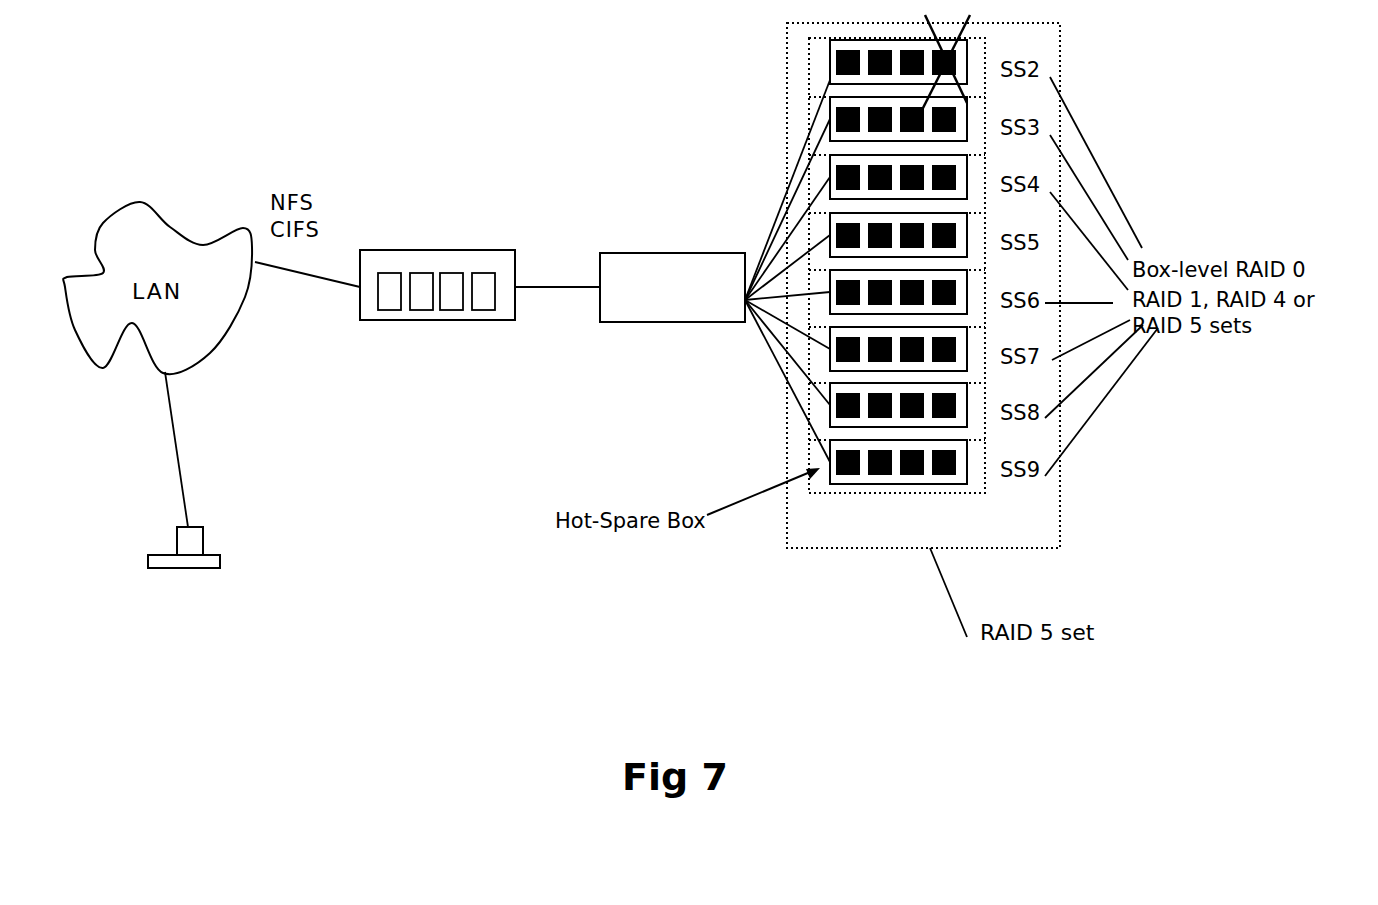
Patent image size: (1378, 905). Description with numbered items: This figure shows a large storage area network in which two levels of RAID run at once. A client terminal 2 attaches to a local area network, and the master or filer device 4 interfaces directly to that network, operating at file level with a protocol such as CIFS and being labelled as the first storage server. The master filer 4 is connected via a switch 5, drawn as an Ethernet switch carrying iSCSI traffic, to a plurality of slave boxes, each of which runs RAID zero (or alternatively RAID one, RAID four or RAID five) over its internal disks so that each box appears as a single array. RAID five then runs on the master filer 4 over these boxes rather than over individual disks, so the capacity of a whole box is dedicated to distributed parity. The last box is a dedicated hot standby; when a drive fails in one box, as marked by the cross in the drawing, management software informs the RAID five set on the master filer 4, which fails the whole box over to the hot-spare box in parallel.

The client terminal 2 is at (205, 530).
The master or filer device 4 is at (487, 253).
The switch 5 is at (620, 318).